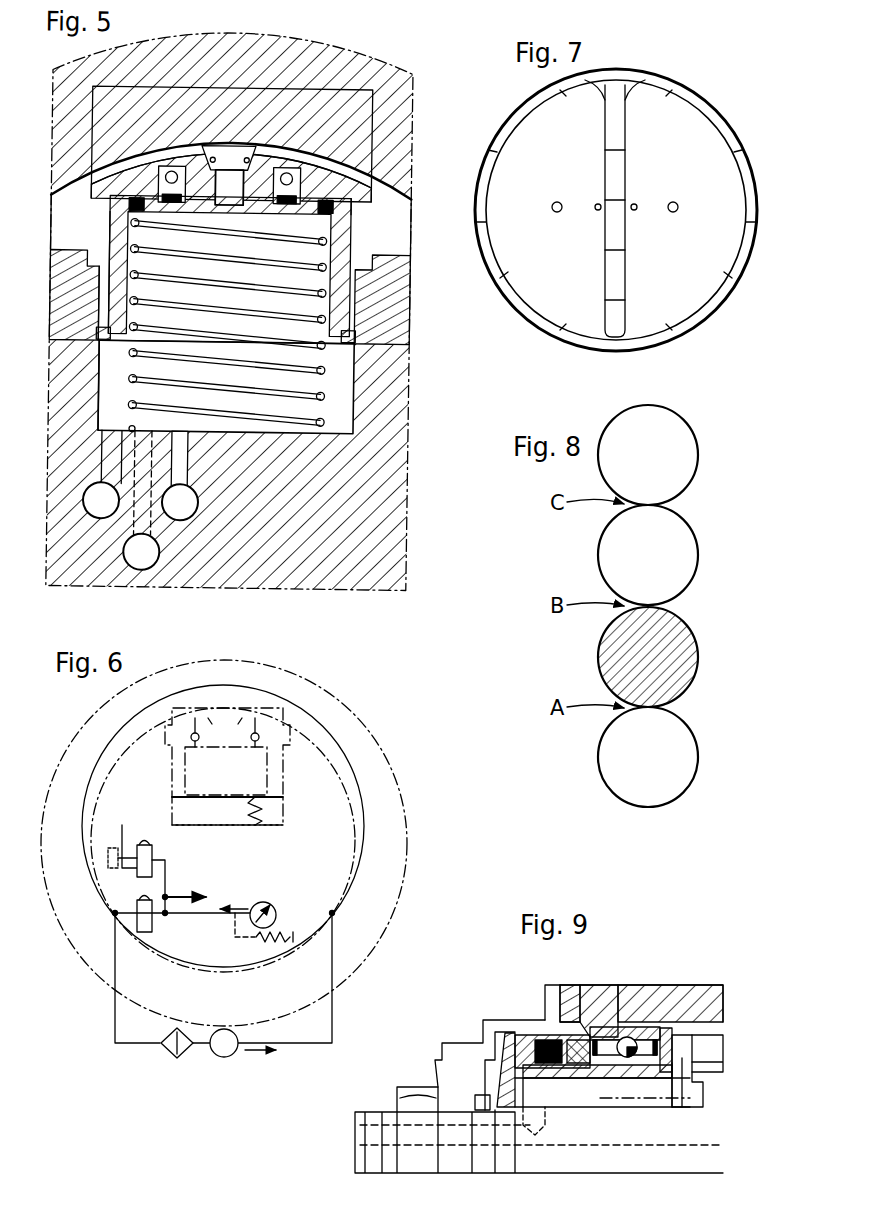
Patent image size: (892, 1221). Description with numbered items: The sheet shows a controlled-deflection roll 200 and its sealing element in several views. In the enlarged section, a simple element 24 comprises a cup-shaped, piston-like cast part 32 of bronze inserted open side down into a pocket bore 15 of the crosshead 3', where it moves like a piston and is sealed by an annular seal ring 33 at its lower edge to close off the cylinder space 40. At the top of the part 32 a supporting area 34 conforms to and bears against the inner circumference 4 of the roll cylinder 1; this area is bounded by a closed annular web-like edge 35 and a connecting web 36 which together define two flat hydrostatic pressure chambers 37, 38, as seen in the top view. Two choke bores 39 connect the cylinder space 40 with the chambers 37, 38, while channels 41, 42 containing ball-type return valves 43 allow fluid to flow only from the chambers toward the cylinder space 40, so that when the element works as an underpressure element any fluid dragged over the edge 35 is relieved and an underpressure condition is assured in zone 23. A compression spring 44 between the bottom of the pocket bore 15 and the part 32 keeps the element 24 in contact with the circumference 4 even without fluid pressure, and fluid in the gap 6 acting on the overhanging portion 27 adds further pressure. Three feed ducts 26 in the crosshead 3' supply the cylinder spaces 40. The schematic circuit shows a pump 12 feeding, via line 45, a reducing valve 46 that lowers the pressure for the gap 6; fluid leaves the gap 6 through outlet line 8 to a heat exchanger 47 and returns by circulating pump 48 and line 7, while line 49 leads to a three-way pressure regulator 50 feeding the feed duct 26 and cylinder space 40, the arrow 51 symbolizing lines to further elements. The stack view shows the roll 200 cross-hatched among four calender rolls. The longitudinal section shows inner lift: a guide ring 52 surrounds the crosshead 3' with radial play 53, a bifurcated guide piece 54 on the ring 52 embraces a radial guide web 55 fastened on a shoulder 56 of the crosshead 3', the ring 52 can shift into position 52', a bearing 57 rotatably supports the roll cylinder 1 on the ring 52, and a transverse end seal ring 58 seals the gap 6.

In FIG. 5, the roll cylinder 1 is at (357, 62).
In FIG. 6, the roll cylinder 1 is at (305, 690).
In FIG. 9, the roll cylinder 1 is at (660, 985).
In FIG. 5, the crosshead 3' is at (212, 297).
In FIG. 6, the crosshead 3' is at (237, 828).
In FIG. 9, the crosshead 3' is at (539, 1096).
In FIG. 5, the inner circumference 4 is at (73, 178).
In FIG. 5, the gap 6 is at (88, 238).
In FIG. 6, the gap 6 is at (340, 785).
In FIG. 9, the gap 6 is at (710, 1055).
In FIG. 6, the line 7 is at (332, 1003).
In FIG. 6, the outlet line 8 is at (115, 1003).
In FIG. 6, the pump 12 is at (263, 902).
In FIG. 5, the pocket bore 15 is at (100, 350).
In FIG. 5, the zone 23 is at (256, 88).
In FIG. 5, the element 24 is at (360, 240).
In FIG. 6, the element 24 is at (290, 745).
In FIG. 5, the feed ducts 26 is at (140, 553).
In FIG. 6, the feed ducts 26 is at (130, 840).
In FIG. 5, the overhanging portion 27 is at (110, 215).
In FIG. 5, the cup-shaped piston-like cast part 32 is at (355, 218).
In FIG. 5, the annular seal ring 33 is at (360, 331).
In FIG. 5, the supporting area 34 is at (93, 172).
In FIG. 7, the supporting area 34 is at (630, 80).
In FIG. 5, the annular web-like edge 35 is at (345, 178).
In FIG. 7, the annular web-like edge 35 is at (712, 108).
In FIG. 5, the connecting web 36 is at (232, 148).
In FIG. 7, the connecting web 36 is at (630, 128).
In FIG. 5, the hydrostatic pressure chamber 37 is at (162, 168).
In FIG. 7, the hydrostatic pressure chamber 37 is at (553, 258).
In FIG. 5, the hydrostatic pressure chamber 38 is at (300, 170).
In FIG. 7, the hydrostatic pressure chamber 38 is at (683, 258).
In FIG. 5, the choke bores 39 is at (214, 158).
In FIG. 7, the choke bores 39 is at (598, 203).
In FIG. 6, the choke bores 39 is at (243, 722).
In FIG. 5, the cylinder space 40 is at (115, 382).
In FIG. 6, the cylinder space 40 is at (190, 810).
In FIG. 5, the channel 41 is at (173, 170).
In FIG. 7, the channel 41 is at (557, 201).
In FIG. 5, the channel 42 is at (288, 170).
In FIG. 7, the channel 42 is at (673, 201).
In FIG. 5, the return valves 43 is at (138, 197).
In FIG. 6, the return valves 43 is at (257, 742).
In FIG. 5, the compression spring 44 is at (130, 298).
In FIG. 6, the compression spring 44 is at (262, 800).
In FIG. 6, the line 45 is at (196, 917).
In FIG. 6, the reducing valve 46 is at (132, 904).
In FIG. 6, the heat exchanger 47 is at (162, 1050).
In FIG. 6, the circulating pump 48 is at (236, 1052).
In FIG. 6, the line 49 is at (166, 872).
In FIG. 6, the three-way pressure regulator 50 is at (152, 851).
In FIG. 6, the arrow 51 is at (188, 894).
In FIG. 9, the guide ring 52 is at (602, 1108).
In FIG. 9, the shifted position of guide ring 52' is at (645, 1122).
In FIG. 9, the radial play 53 is at (565, 1100).
In FIG. 9, the bifurcated guide piece 54 is at (695, 1043).
In FIG. 9, the radial guide web 55 is at (678, 1090).
In FIG. 9, the shoulder 56 is at (705, 1083).
In FIG. 9, the bearing 57 is at (623, 1036).
In FIG. 9, the transverse end seal ring 58 is at (548, 1040).
In FIG. 8, the roll 200 is at (698, 622).
In FIG. 9, the roll 200 is at (699, 982).